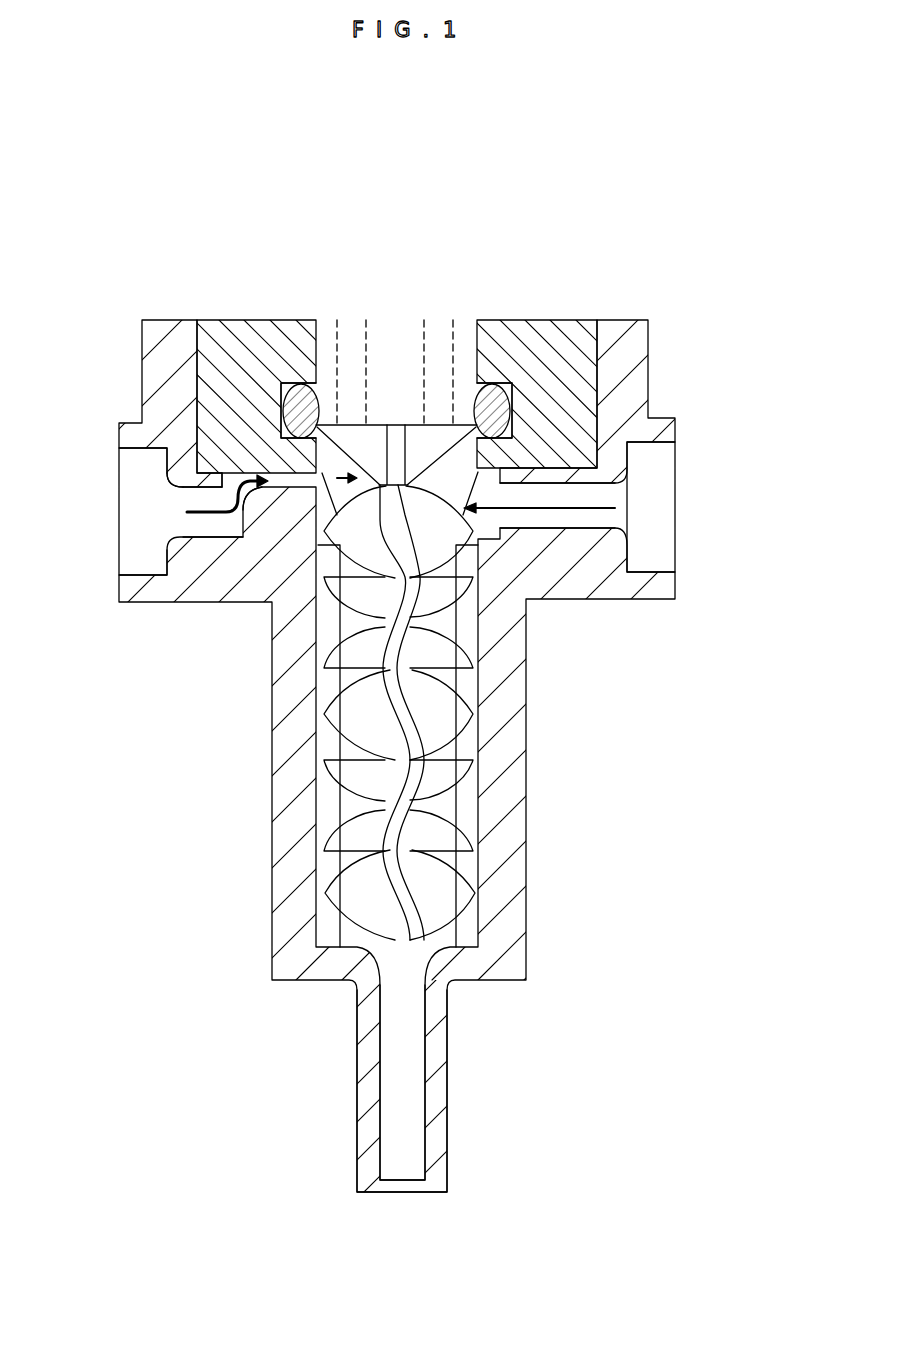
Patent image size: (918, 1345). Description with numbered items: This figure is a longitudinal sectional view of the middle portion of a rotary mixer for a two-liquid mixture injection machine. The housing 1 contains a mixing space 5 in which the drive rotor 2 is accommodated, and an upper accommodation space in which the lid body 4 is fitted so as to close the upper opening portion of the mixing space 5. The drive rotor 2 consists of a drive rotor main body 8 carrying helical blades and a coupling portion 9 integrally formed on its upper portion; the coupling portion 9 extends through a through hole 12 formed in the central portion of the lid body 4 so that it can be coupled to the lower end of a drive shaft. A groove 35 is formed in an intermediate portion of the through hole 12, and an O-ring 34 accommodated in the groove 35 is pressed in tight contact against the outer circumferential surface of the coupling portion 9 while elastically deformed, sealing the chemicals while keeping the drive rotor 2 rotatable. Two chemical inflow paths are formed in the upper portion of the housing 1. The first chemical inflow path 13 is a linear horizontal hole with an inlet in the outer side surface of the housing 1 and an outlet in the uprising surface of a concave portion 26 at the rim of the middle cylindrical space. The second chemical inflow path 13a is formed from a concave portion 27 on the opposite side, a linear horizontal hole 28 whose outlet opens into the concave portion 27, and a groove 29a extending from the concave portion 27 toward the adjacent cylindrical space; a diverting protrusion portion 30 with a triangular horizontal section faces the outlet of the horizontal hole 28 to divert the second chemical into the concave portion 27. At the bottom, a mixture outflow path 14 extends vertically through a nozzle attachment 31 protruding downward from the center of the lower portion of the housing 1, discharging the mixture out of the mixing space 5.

The housing 1 is at (512, 872).
The drive rotor 2 is at (385, 720).
The lid body 4 is at (562, 318).
The mixing space 5 is at (456, 790).
The drive rotor main body 8 is at (390, 788).
The coupling portion 9 is at (372, 350).
The through hole 12 is at (481, 412).
The first chemical inflow path 13 is at (590, 520).
The second chemical inflow path 13a is at (170, 533).
The mixture outflow path 14 is at (403, 1130).
The concave portion 26 is at (503, 517).
The concave portion 27 is at (236, 540).
The linear horizontal hole 28 is at (190, 497).
The groove 29a is at (248, 488).
The diverting protrusion portion 30 is at (240, 535).
The nozzle attachment 31 is at (372, 1115).
The O-ring 34 is at (300, 395).
The groove 35 is at (292, 400).